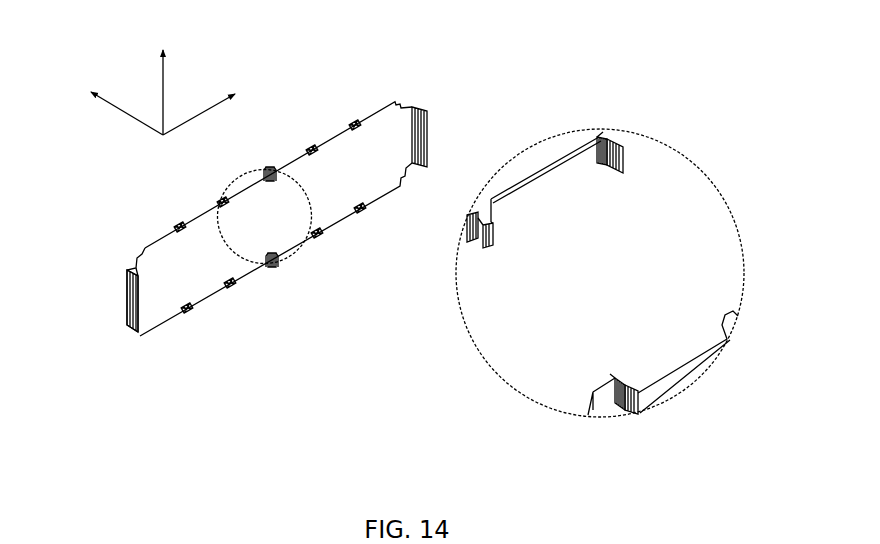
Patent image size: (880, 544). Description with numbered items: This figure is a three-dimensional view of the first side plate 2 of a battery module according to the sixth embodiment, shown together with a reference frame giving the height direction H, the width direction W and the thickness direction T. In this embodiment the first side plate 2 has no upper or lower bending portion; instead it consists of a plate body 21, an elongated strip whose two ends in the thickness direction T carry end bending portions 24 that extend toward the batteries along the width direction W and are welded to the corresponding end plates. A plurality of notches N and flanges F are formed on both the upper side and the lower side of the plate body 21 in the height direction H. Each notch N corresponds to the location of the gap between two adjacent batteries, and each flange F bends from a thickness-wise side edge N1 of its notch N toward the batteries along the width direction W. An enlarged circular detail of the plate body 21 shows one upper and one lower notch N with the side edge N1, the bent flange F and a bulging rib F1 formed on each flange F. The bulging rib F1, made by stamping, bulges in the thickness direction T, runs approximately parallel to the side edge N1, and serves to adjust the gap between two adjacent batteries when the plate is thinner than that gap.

The first side plate 2 is at (197, 196).
The plate body 21 is at (263, 180).
The end bending portion 24 is at (126, 307).
The notch N is at (274, 166).
The thickness-wise side edge N1 is at (603, 133).
The flange F is at (268, 168).
The bulging rib F1 is at (270, 182).
The height direction H is at (173, 85).
The width direction W is at (117, 113).
The thickness direction T is at (199, 114).